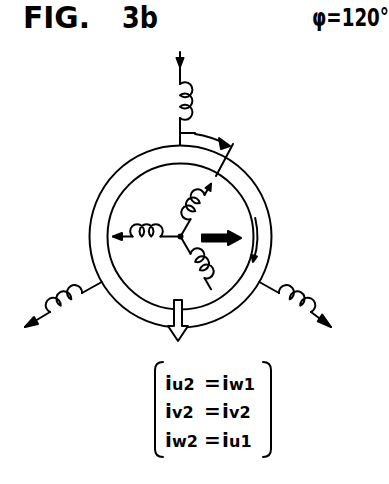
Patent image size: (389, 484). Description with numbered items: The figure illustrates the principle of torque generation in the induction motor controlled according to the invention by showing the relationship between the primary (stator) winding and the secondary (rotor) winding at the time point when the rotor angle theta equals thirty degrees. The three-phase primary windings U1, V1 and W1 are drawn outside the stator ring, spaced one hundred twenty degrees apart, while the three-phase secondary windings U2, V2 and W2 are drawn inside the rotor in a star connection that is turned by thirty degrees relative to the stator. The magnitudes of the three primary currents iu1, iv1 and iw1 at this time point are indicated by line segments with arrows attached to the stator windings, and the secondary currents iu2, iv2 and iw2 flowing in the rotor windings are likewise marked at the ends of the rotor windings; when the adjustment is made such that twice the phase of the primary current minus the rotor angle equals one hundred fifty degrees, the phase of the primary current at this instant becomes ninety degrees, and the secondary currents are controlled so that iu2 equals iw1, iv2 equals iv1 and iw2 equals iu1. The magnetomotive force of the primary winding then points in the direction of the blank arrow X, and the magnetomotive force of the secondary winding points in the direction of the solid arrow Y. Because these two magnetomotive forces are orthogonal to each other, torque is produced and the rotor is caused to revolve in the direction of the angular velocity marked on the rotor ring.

The primary winding U1 is at (200, 98).
The primary winding V1 is at (295, 317).
The primary winding W1 is at (59, 301).
The secondary winding U2 is at (186, 206).
The secondary winding V2 is at (209, 263).
The secondary winding W2 is at (147, 221).
The blank arrow X is at (168, 329).
The solid arrow Y is at (221, 223).
The primary current iu1 is at (177, 67).
The primary current iv1 is at (320, 312).
The primary current iw1 is at (42, 329).
The secondary current iu2 is at (209, 183).
The secondary current iv2 is at (208, 286).
The secondary current iw2 is at (121, 239).